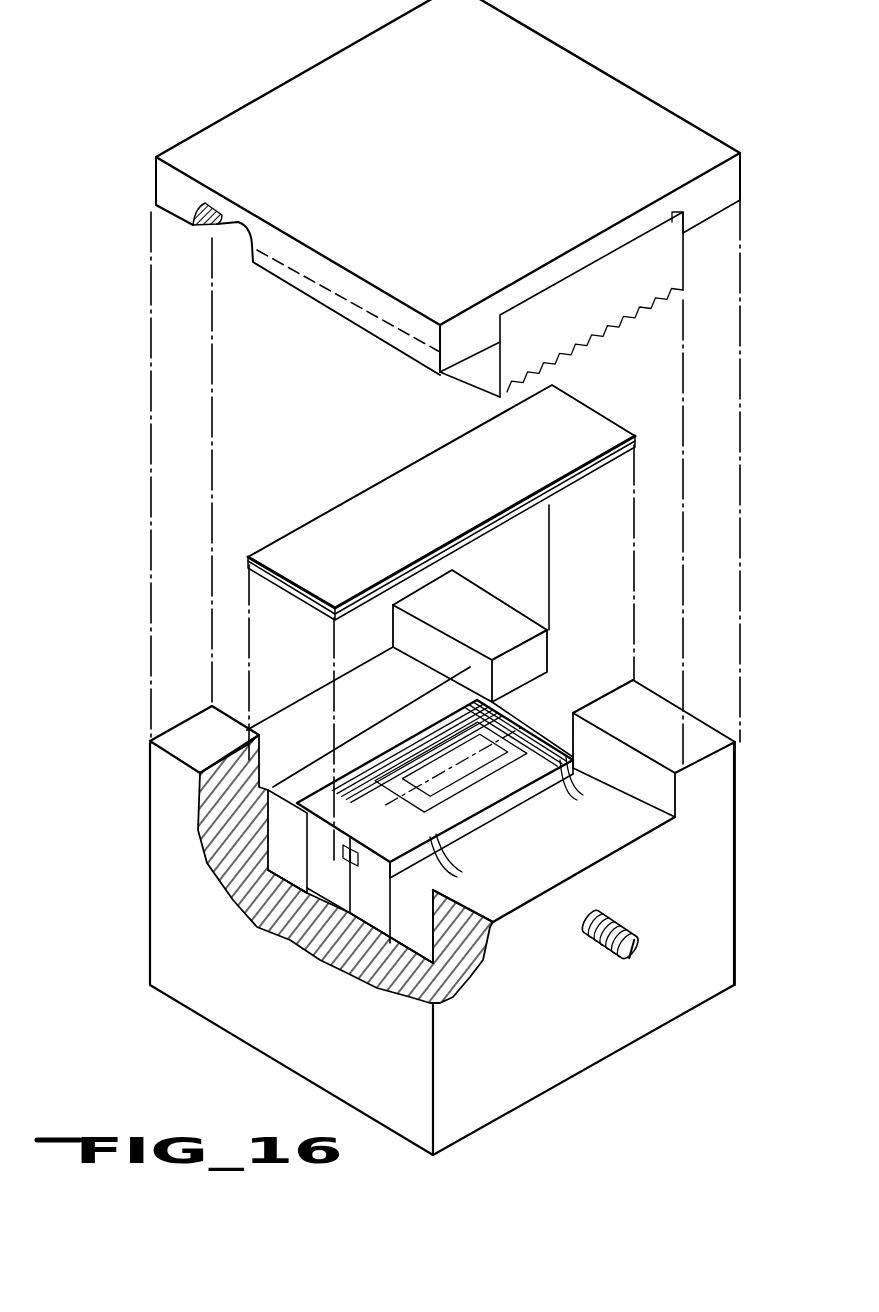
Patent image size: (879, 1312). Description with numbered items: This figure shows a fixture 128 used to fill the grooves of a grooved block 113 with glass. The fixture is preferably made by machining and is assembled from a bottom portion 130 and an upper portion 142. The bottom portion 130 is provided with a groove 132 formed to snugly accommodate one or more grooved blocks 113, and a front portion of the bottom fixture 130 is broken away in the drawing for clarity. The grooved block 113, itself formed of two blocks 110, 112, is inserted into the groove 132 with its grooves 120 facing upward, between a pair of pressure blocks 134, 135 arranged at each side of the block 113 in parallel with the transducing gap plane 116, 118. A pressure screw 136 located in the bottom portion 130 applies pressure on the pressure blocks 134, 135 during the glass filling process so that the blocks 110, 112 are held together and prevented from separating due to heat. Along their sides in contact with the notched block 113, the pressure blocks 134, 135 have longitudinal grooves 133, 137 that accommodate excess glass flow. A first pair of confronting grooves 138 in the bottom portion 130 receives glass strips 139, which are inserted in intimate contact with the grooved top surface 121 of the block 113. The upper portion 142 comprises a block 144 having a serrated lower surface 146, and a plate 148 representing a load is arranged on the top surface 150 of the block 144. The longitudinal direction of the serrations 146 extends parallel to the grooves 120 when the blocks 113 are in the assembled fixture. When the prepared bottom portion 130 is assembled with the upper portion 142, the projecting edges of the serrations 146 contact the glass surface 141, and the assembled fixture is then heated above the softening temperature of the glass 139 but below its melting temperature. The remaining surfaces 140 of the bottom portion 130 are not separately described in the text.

The block 110 is at (325, 896).
The block 112 is at (378, 932).
The grooved block 113 is at (430, 748).
The transducing gap plane 116 is at (345, 870).
The transducing gap plane 118 is at (373, 878).
The grooves 120 is at (567, 762).
The grooved top surface 121 is at (497, 783).
The fixture 128 is at (108, 600).
The bottom portion 130 is at (640, 1028).
The groove 132 is at (396, 992).
The longitudinal groove 133 is at (322, 795).
The pressure block 134 is at (302, 853).
The pressure block 135 is at (428, 923).
The pressure screw 136 is at (622, 928).
The longitudinal groove 137 is at (470, 820).
The confronting grooves 138 is at (558, 690).
The glass strip 139 is at (596, 420).
The standoff blocks / seats 140 is at (312, 700).
The glass surface 141 is at (458, 502).
The upper portion 142 is at (278, 58).
The block 144 is at (686, 260).
The serrated lower surface 146 is at (602, 336).
The plate 148 is at (612, 86).
The top surface 150 is at (676, 212).